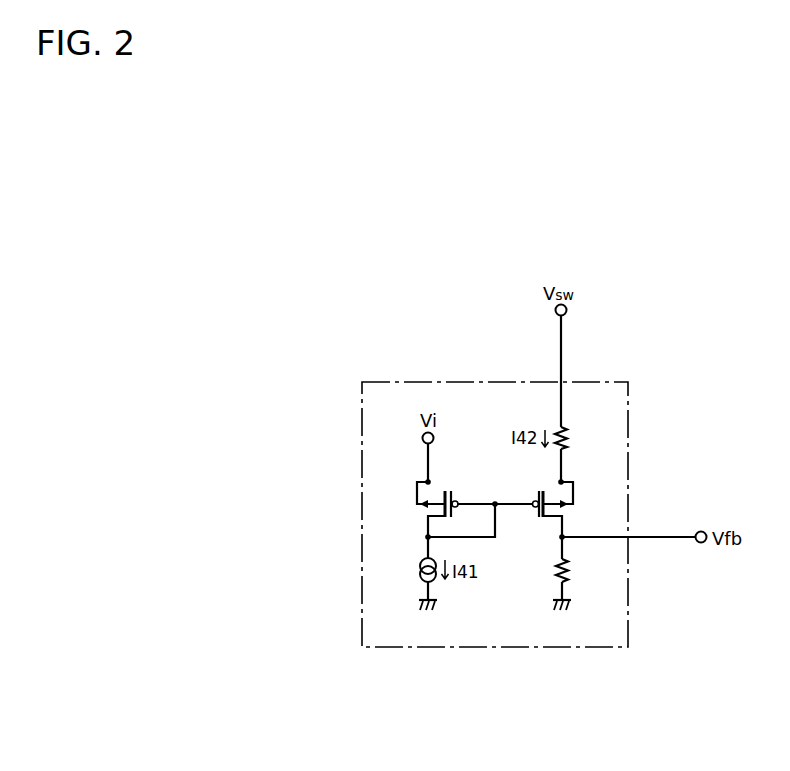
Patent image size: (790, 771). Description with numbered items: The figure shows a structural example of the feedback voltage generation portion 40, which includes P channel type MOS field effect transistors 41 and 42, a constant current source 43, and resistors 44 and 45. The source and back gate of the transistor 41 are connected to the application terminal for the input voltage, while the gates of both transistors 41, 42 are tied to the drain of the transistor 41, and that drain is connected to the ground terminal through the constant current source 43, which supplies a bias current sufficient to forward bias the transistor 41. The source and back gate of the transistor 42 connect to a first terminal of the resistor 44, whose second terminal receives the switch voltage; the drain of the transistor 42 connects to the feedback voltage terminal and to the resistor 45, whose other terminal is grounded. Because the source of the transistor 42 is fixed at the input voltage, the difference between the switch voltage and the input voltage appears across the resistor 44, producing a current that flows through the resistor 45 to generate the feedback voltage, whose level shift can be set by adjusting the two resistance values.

The feedback voltage generation portion 40 is at (495, 382).
The P channel type MOS field effect transistor 41 is at (412, 504).
The P channel type MOS field effect transistor 42 is at (576, 504).
The constant current source 43 is at (412, 571).
The resistor 44 is at (569, 437).
The resistor 45 is at (576, 571).